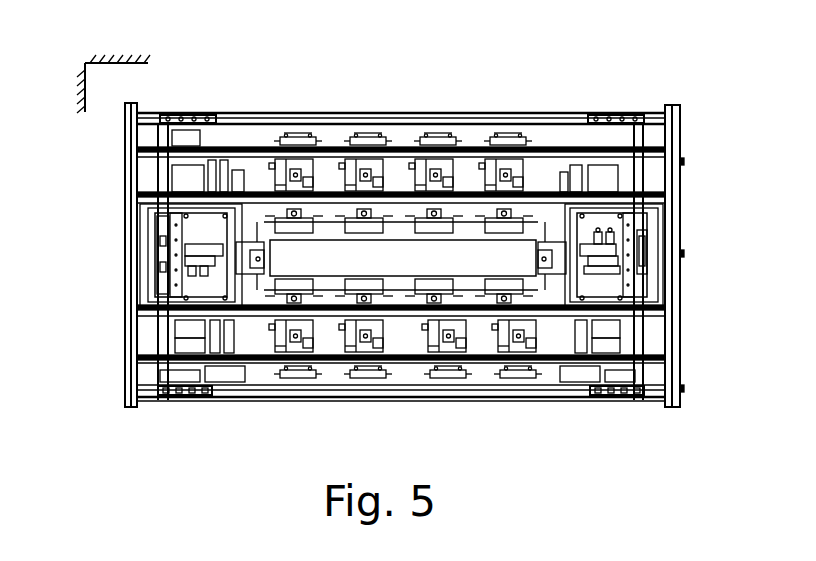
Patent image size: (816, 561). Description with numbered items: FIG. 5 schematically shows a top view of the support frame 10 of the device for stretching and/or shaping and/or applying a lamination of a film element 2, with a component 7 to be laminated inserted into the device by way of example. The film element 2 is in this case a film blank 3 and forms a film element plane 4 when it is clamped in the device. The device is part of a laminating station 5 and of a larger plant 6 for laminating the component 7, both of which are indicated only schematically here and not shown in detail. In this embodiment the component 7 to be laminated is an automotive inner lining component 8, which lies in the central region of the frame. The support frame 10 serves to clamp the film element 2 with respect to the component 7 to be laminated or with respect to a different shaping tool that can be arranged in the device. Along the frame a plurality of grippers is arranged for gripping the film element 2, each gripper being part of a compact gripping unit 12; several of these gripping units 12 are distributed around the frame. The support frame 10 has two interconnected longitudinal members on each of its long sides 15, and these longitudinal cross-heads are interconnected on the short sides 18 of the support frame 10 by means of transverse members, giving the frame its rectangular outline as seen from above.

The film element 2 is at (532, 195).
The film blank 3 is at (540, 302).
The film element plane 4 is at (462, 222).
The laminating station 5 is at (676, 104).
The plant 6 is at (106, 63).
The component 7 is at (459, 267).
The automotive inner lining component 8 is at (403, 345).
The support frame 10 is at (406, 237).
The gripping unit 12 is at (440, 380).
The long sides 15 is at (376, 113).
The short sides 18 is at (406, 215).